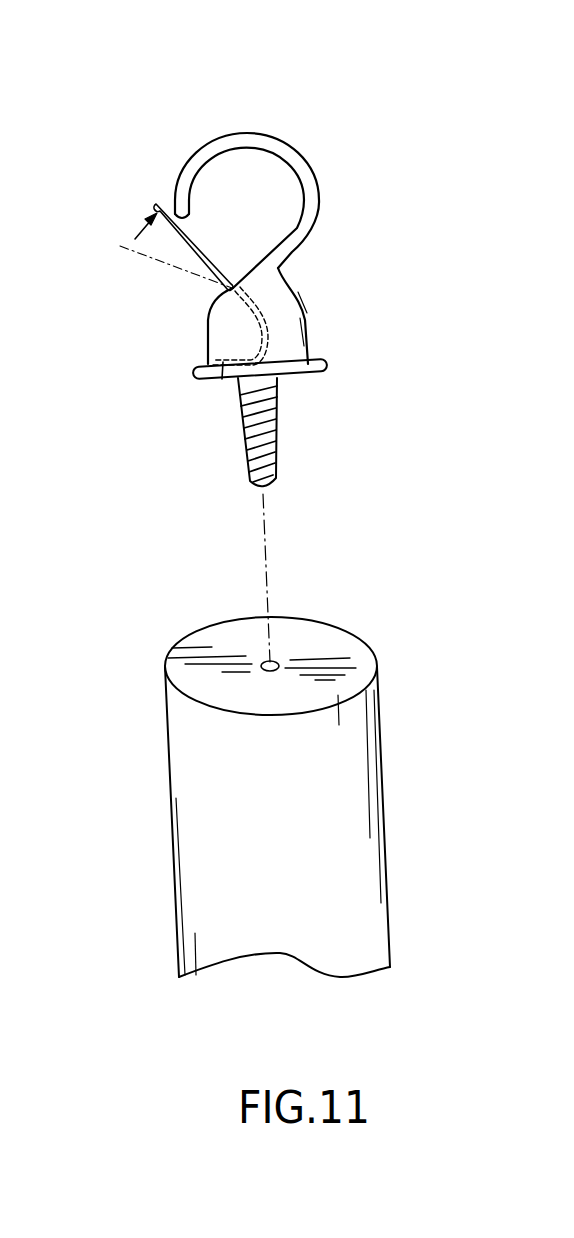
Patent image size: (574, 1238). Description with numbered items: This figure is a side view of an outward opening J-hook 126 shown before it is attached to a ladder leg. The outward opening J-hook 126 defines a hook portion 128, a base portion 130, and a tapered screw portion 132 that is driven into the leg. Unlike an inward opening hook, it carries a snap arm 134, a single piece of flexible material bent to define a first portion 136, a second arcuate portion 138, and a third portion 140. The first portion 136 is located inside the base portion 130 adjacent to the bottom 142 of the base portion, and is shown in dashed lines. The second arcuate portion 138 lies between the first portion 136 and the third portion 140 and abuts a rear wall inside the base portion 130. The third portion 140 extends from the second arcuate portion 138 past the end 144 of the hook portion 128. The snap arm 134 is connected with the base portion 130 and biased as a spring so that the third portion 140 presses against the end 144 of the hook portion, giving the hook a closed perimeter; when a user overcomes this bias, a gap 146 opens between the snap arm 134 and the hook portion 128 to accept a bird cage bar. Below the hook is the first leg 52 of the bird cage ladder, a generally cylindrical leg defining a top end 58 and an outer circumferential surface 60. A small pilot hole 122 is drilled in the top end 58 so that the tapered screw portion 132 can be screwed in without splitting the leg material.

The outward opening J-hook 126 is at (310, 118).
The hook portion 128 is at (210, 143).
The end of hook portion 144 is at (177, 204).
The snap arm 134 is at (205, 256).
The base portion 130 is at (287, 310).
The second arcuate portion 138 is at (244, 302).
The bottom of base portion 142 is at (328, 367).
The first portion 136 is at (217, 384).
The tapered screw portion 132 is at (278, 434).
The third portion 140 is at (191, 253).
The gap 146 is at (153, 240).
The first leg 52 is at (380, 684).
The outer circumferential surface 60 is at (347, 788).
The top end 58 is at (218, 632).
The pilot hole 122 is at (274, 664).